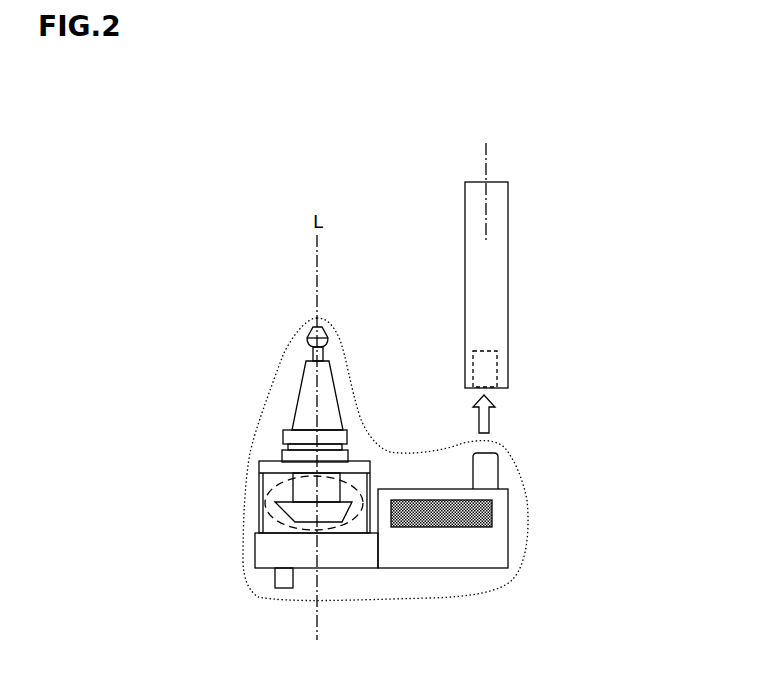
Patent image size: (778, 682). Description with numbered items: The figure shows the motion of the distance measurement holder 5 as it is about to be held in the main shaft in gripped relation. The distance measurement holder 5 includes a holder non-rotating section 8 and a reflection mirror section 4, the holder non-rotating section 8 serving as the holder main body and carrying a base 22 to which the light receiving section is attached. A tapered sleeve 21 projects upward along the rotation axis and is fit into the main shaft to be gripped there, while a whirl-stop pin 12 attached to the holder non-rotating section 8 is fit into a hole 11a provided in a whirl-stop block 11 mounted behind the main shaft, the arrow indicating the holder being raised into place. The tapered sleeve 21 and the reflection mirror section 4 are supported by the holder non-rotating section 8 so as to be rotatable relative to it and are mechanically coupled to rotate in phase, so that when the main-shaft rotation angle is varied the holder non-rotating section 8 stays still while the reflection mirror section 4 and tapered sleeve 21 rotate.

The reflection mirror section 4 is at (340, 530).
The distance measurement holder 5 is at (532, 547).
The holder non-rotating section 8 is at (267, 460).
The whirl-stop block 11 is at (507, 255).
The hole 11a is at (488, 367).
The whirl-stop pin 12 is at (498, 469).
The tapered sleeve 21 is at (344, 378).
The base 22 is at (245, 558).